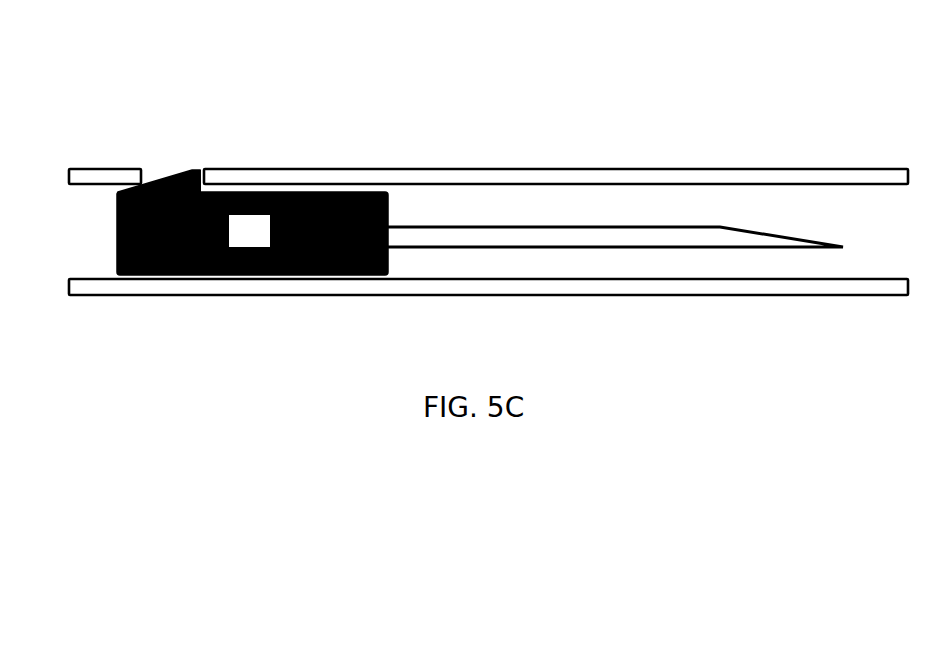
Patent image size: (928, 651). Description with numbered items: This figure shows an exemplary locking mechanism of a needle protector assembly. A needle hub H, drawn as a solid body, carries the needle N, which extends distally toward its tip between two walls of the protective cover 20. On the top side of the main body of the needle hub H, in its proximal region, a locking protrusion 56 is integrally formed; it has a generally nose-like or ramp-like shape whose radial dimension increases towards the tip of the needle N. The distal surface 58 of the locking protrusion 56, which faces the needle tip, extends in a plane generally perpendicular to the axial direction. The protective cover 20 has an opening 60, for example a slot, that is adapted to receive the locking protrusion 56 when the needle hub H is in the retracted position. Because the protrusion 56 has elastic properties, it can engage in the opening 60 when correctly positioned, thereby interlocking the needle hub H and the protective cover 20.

The protective cover 20 is at (374, 168).
The locking protrusion 56 is at (167, 178).
The distal surface 58 is at (205, 180).
The opening 60 is at (147, 158).
The needle hub H is at (249, 231).
The needle N is at (540, 248).